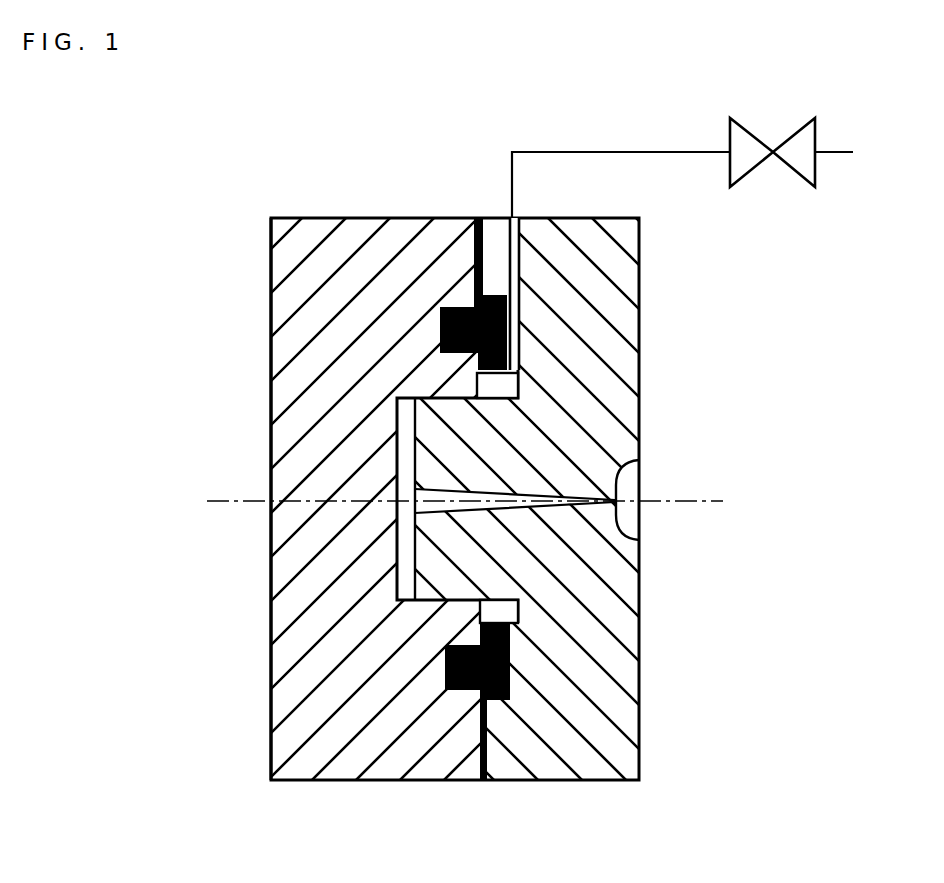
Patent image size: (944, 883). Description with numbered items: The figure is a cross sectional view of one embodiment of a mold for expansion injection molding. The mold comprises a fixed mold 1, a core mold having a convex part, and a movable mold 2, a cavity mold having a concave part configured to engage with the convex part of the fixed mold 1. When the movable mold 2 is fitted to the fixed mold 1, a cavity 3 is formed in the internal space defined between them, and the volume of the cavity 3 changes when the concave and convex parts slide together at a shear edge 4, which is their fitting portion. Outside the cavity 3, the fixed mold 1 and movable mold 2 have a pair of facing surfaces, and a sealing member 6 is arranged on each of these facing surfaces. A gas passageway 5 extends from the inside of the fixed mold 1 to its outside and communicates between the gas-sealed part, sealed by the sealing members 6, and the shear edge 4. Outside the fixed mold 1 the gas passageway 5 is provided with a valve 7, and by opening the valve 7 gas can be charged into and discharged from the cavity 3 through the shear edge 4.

The fixed mold 1 is at (593, 334).
The movable mold 2 is at (303, 374).
The cavity 3 is at (405, 560).
The shear edge 4 is at (405, 620).
The gas passageway 5 is at (520, 260).
The sealing member 6 is at (510, 670).
The valve 7 is at (798, 175).